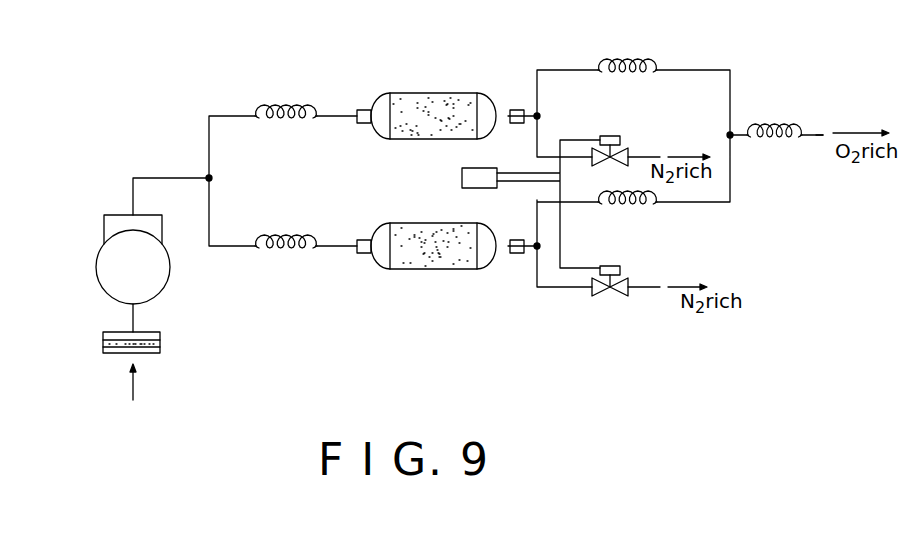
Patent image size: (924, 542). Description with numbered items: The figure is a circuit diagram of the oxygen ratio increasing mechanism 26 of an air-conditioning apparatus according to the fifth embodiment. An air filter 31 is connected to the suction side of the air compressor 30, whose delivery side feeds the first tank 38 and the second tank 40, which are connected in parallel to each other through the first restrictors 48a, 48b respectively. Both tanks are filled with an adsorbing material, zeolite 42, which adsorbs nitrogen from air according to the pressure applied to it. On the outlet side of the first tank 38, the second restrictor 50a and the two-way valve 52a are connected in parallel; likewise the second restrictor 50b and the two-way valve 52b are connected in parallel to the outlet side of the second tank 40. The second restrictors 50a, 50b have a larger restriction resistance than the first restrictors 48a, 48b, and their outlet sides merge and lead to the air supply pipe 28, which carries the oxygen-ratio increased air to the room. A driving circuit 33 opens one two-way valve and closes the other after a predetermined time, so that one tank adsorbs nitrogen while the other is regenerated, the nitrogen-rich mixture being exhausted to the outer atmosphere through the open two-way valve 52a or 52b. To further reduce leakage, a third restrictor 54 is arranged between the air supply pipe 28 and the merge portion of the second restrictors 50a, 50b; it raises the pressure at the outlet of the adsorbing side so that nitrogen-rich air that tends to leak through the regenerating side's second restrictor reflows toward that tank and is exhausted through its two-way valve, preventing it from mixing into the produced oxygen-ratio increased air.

The oxygen ratio increasing mechanism 26 is at (362, 68).
The air supply pipe 28 is at (819, 128).
The air compressor 30 is at (95, 277).
The air filter 31 is at (103, 347).
The driving circuit 33 is at (462, 177).
The first tank 38 is at (401, 91).
The second tank 40 is at (456, 270).
The zeolite 42 is at (440, 96).
The first restrictor 48a is at (265, 109).
The first restrictor 48b is at (288, 258).
The second restrictor 50a is at (620, 66).
The second restrictor 50b is at (625, 204).
The two-way valve 52a is at (599, 135).
The two-way valve 52b is at (612, 294).
The third restrictor 54 is at (779, 128).